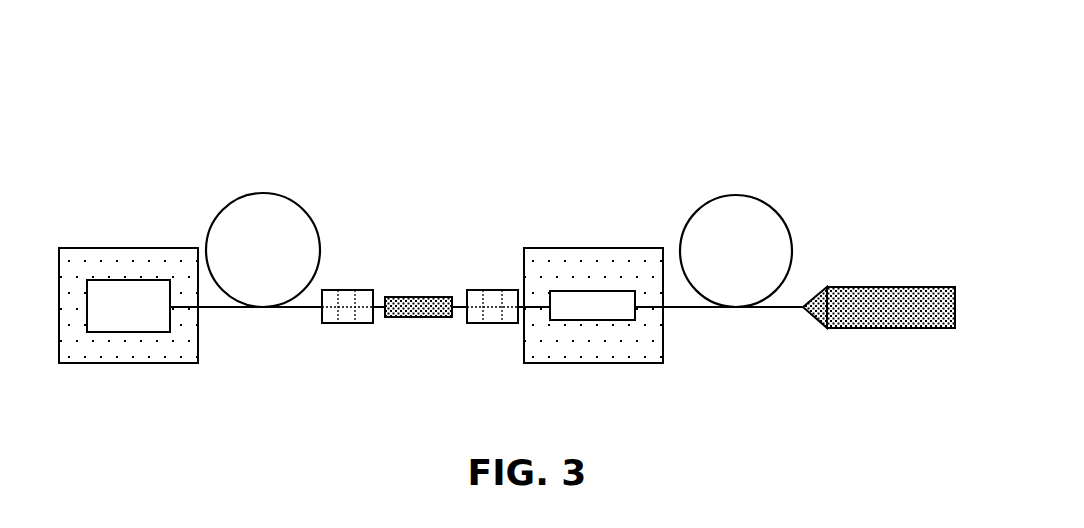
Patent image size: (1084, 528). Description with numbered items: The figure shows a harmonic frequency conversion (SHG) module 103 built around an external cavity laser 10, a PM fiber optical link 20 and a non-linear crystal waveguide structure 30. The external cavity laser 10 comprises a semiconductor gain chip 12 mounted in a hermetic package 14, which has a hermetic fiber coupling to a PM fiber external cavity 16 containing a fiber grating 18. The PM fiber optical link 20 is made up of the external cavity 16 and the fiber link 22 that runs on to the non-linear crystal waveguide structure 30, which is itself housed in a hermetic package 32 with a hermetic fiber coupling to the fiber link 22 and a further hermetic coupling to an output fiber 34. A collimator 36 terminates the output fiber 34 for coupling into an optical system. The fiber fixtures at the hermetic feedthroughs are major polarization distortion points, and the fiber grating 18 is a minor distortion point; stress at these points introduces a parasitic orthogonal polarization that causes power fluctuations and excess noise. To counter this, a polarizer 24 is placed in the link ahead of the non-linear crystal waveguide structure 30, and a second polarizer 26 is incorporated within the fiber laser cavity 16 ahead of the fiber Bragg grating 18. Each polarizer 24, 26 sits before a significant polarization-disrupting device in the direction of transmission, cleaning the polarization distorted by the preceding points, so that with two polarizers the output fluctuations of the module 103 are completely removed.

The SHG module 103 is at (432, 97).
The external cavity laser 10 is at (137, 177).
The semiconductor gain chip 12 is at (118, 263).
The hermetic package 14 is at (128, 274).
The PM fiber external cavity 16 is at (265, 229).
The fiber grating 18 is at (418, 263).
The PM fiber optical link 20 is at (327, 368).
The fiber link 22 is at (486, 345).
The polarizer 24 is at (492, 275).
The polarizer 26 is at (361, 332).
The non-linear crystal waveguide structure 30 is at (599, 357).
The hermetic package 32 is at (593, 274).
The output fiber 34 is at (736, 215).
The collimator 36 is at (879, 265).